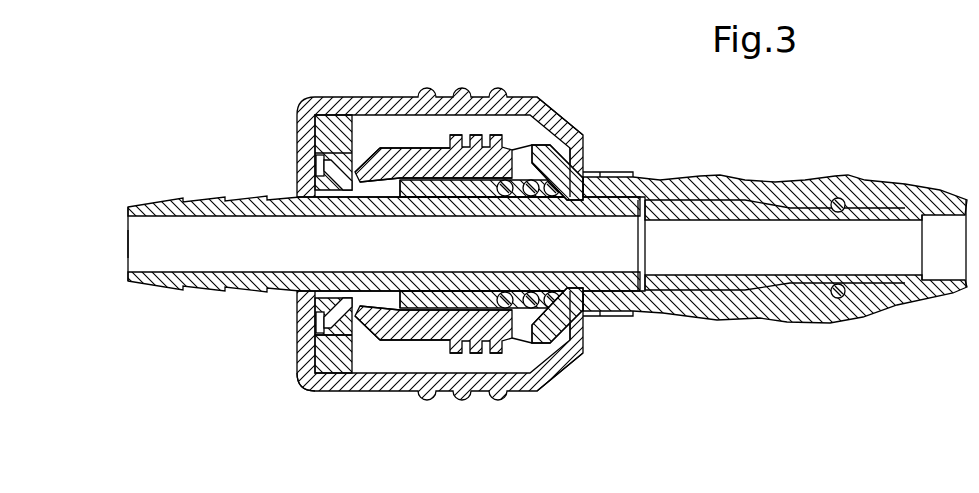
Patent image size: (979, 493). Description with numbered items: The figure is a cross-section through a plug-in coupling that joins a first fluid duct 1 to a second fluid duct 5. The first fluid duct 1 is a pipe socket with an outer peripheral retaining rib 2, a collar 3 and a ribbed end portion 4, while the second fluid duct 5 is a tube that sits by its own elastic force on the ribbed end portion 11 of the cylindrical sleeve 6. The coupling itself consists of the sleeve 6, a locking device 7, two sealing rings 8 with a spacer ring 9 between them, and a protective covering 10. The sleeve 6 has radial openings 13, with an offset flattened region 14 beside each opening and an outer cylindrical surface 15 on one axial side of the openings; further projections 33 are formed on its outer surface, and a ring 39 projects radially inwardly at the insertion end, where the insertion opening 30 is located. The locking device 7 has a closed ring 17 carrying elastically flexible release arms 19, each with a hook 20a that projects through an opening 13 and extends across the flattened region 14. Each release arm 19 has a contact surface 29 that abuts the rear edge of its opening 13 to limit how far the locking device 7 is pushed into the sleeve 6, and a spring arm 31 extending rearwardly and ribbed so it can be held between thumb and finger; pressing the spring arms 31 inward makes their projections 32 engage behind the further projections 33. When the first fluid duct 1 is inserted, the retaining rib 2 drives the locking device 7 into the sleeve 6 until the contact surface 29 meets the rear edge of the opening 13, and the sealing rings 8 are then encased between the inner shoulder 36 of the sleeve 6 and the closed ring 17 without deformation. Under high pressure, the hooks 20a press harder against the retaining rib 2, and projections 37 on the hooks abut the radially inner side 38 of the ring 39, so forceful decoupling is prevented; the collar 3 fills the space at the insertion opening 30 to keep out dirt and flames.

The first fluid duct 1 is at (127, 237).
The retaining rib 2 is at (402, 330).
The collar 3 is at (322, 163).
The ribbed end portion 4 is at (196, 200).
The second fluid duct 5 is at (823, 183).
The cylindrical sleeve 6 is at (626, 176).
The locking device 7 is at (420, 160).
The sealing rings 8 is at (538, 145).
The spacer ring 9 is at (558, 135).
The protective covering 10 is at (295, 128).
The ribbed end portion 11 is at (730, 200).
The radial openings 13 is at (343, 125).
The flattened region 14 is at (476, 134).
The outer cylindrical surface 15 is at (576, 160).
The closed ring 17 is at (470, 305).
The release arms 19 is at (452, 305).
The hooks 20a is at (414, 146).
The contact surface 29 is at (395, 335).
The insertion opening 30 is at (325, 120).
The spring arm 31 is at (456, 134).
The projections 32 is at (518, 148).
The further projections 33 is at (505, 179).
The inner shoulder 36 is at (581, 290).
The projections 37 is at (352, 130).
The radially inner side 38 is at (322, 338).
The ring 39 is at (318, 376).